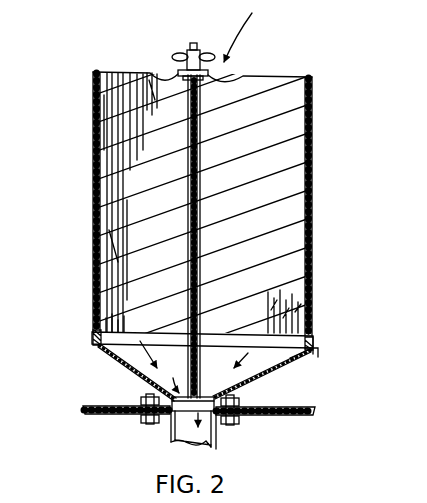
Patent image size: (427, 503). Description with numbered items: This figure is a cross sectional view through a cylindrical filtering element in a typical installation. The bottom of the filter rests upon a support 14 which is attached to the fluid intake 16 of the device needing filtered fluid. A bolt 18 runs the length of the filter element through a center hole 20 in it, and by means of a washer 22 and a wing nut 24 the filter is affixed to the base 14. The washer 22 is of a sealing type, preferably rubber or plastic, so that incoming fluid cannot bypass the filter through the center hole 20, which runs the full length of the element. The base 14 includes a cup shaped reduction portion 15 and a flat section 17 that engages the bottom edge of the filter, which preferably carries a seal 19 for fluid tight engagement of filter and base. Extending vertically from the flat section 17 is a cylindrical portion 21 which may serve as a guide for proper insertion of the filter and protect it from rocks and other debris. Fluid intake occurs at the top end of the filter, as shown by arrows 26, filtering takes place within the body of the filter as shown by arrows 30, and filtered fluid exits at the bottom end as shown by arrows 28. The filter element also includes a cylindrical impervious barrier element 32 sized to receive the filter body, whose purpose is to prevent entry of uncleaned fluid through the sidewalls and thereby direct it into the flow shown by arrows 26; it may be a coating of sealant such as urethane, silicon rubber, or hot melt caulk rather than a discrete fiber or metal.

The support 14 is at (292, 396).
The cup shaped reduction portion 15 is at (283, 356).
The fluid intake 16 is at (173, 433).
The flat section 17 is at (311, 351).
The bolt 18 is at (194, 45).
The seal 19 is at (313, 336).
The center hole 20 is at (206, 79).
The cylindrical portion 21 is at (313, 262).
The washer 22 is at (160, 74).
The wing nut 24 is at (179, 54).
The arrows 26 is at (256, 60).
The arrows 28 is at (263, 340).
The arrows 30 is at (110, 150).
The impervious barrier element 32 is at (299, 70).